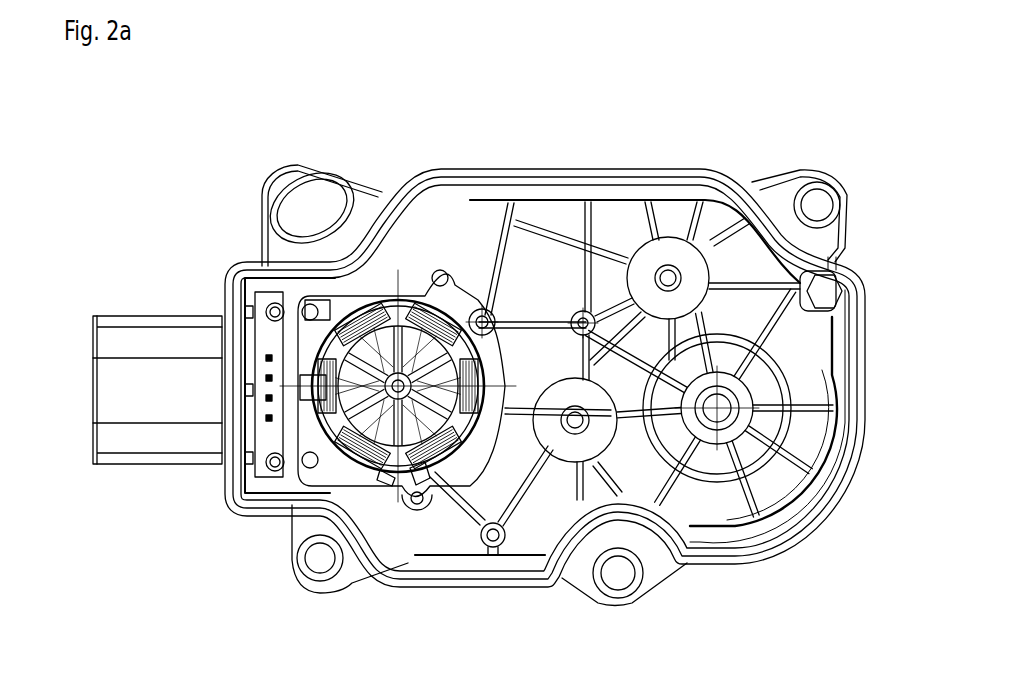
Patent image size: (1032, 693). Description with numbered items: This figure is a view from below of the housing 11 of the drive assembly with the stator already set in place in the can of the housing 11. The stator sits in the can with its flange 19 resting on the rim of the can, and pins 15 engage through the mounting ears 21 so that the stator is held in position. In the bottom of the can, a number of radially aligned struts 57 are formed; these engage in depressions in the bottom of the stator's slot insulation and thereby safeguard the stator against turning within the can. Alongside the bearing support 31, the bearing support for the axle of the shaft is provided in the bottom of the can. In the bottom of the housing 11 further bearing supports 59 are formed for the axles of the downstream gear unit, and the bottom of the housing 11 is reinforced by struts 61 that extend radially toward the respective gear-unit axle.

The housing 11 is at (412, 184).
The radially aligned struts 57 is at (305, 298).
The flange 19 is at (470, 312).
The bearing support 31 is at (495, 318).
The bearing supports 59 is at (675, 268).
The pins 15 is at (415, 505).
The mounting ears 21 is at (427, 490).
The struts 61 is at (743, 472).